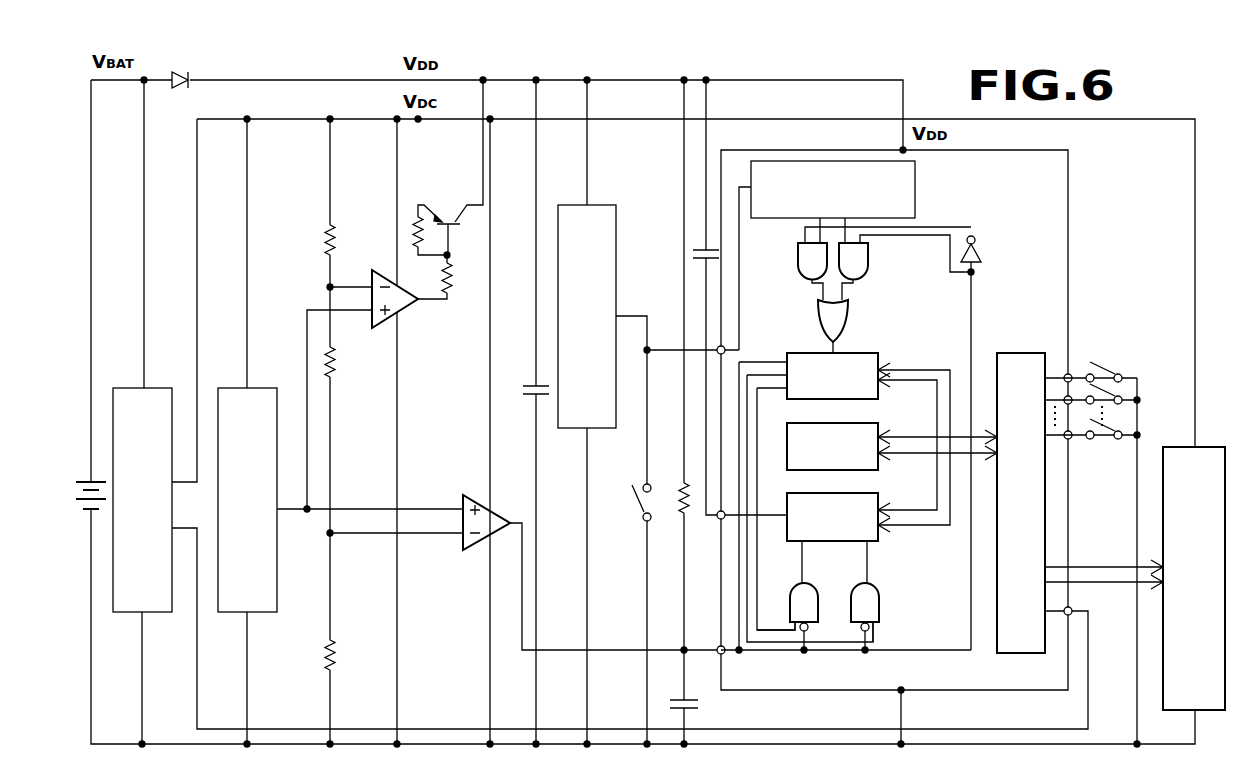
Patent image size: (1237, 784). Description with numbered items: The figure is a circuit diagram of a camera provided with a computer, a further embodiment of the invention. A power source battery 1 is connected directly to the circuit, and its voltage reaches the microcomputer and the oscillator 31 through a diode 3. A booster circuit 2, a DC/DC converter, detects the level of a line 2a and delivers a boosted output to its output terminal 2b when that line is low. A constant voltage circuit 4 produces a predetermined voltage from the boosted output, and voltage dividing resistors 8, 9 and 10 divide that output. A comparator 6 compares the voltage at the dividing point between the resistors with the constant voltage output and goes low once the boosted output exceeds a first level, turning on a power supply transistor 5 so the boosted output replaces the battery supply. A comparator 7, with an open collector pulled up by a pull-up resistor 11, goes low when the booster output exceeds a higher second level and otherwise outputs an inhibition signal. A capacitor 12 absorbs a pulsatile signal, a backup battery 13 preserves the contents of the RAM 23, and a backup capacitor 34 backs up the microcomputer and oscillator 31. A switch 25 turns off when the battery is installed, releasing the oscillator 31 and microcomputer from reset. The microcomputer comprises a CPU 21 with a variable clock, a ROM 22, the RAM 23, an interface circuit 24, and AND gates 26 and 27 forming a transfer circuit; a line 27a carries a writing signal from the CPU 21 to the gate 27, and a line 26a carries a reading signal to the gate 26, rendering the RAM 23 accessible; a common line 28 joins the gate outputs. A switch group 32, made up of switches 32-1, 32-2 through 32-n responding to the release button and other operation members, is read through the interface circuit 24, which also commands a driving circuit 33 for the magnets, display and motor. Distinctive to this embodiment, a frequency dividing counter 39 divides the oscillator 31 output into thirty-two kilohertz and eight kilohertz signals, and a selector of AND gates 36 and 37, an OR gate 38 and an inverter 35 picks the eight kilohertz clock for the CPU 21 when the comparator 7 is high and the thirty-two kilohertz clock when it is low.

The power source battery 1 is at (83, 478).
The booster circuit 2 is at (164, 386).
The line 2a is at (630, 628).
The output terminal 2b is at (187, 316).
The diode 3 is at (175, 90).
The constant voltage circuit 4 is at (269, 386).
The power supply transistor 5 is at (461, 226).
The comparator 6 is at (400, 314).
The comparator 7 is at (474, 496).
The voltage dividing resistor 8 is at (337, 240).
The voltage dividing resistor 9 is at (336, 362).
The voltage dividing resistor 10 is at (336, 656).
The pull-up resistor 11 is at (682, 488).
The capacitor 12 is at (699, 704).
The backup battery 13 is at (684, 282).
The CPU 21 is at (870, 354).
The ROM 22 is at (868, 424).
The RAM 23 is at (868, 494).
The interface circuit 24 is at (1040, 352).
The switch 25 is at (636, 502).
The AND gate 26 is at (879, 606).
The line 26a is at (876, 642).
The AND gate 27 is at (818, 606).
The line 27a is at (757, 592).
The signal line 28 is at (843, 656).
The oscillator 31 is at (616, 220).
The switch group 32 is at (1117, 537).
The switch 32-1 is at (1117, 376).
The switch 32-2 is at (1117, 400).
The switch 32-n is at (1117, 433).
The driving circuit 33 is at (1211, 446).
The backup capacitor 34 is at (532, 386).
The inverter 35 is at (980, 256).
The AND gate 36 is at (798, 262).
The AND gate 37 is at (868, 262).
The OR gate 38 is at (846, 330).
The frequency dividing counter 39 is at (916, 195).